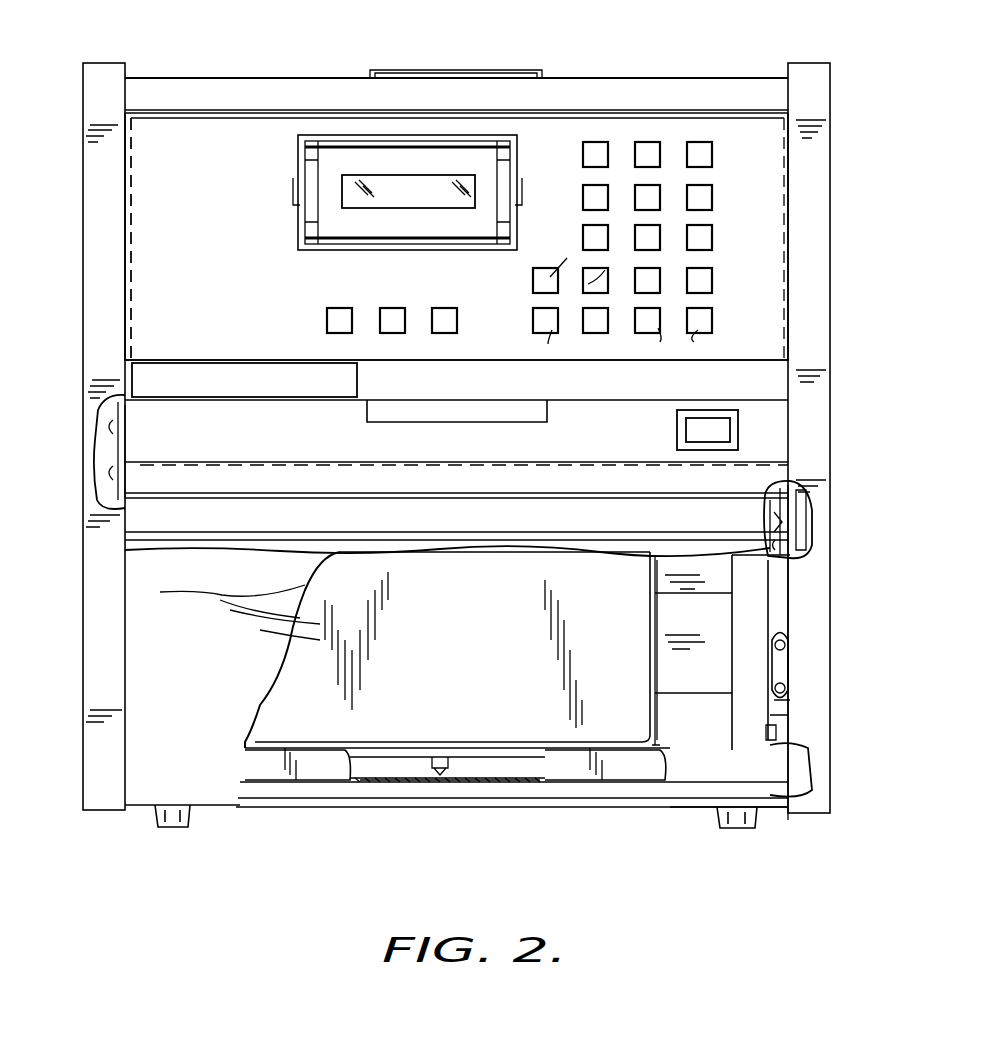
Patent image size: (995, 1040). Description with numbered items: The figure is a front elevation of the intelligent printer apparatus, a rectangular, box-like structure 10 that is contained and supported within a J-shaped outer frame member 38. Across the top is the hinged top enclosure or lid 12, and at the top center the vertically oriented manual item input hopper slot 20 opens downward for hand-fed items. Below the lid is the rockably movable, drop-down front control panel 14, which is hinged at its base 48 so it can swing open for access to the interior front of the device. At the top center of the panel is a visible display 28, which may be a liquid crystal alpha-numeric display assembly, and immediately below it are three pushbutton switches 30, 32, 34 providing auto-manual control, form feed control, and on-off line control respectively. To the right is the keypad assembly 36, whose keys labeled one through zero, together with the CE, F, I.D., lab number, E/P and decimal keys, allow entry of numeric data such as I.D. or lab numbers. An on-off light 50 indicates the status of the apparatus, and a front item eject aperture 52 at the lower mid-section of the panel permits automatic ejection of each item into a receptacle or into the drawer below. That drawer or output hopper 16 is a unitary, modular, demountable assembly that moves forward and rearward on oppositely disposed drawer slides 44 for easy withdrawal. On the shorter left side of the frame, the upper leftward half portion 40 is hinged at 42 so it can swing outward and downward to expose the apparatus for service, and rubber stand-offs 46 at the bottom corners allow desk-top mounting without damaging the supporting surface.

The box-like structure 10 is at (178, 72).
The hinged top enclosure or lid 12 is at (641, 76).
The front control panel 14 is at (242, 138).
The drawer or output hopper 16 is at (388, 790).
The manual item input hopper slot 20 is at (460, 74).
The visible display 28 is at (427, 201).
The pushbutton switch 30 is at (345, 312).
The pushbutton switch 32 is at (398, 312).
The pushbutton switch 34 is at (450, 312).
The keypad assembly 36 is at (724, 245).
The J-shaped outer frame member 38 is at (830, 402).
The upper leftward half portion 40 is at (128, 235).
The hinge 42 is at (98, 444).
The drawer slides 44 is at (783, 655).
The rubber stand-offs 46 is at (168, 828).
The base hinge 48 is at (450, 466).
The on-off light 50 is at (700, 433).
The front item eject aperture 52 is at (450, 406).